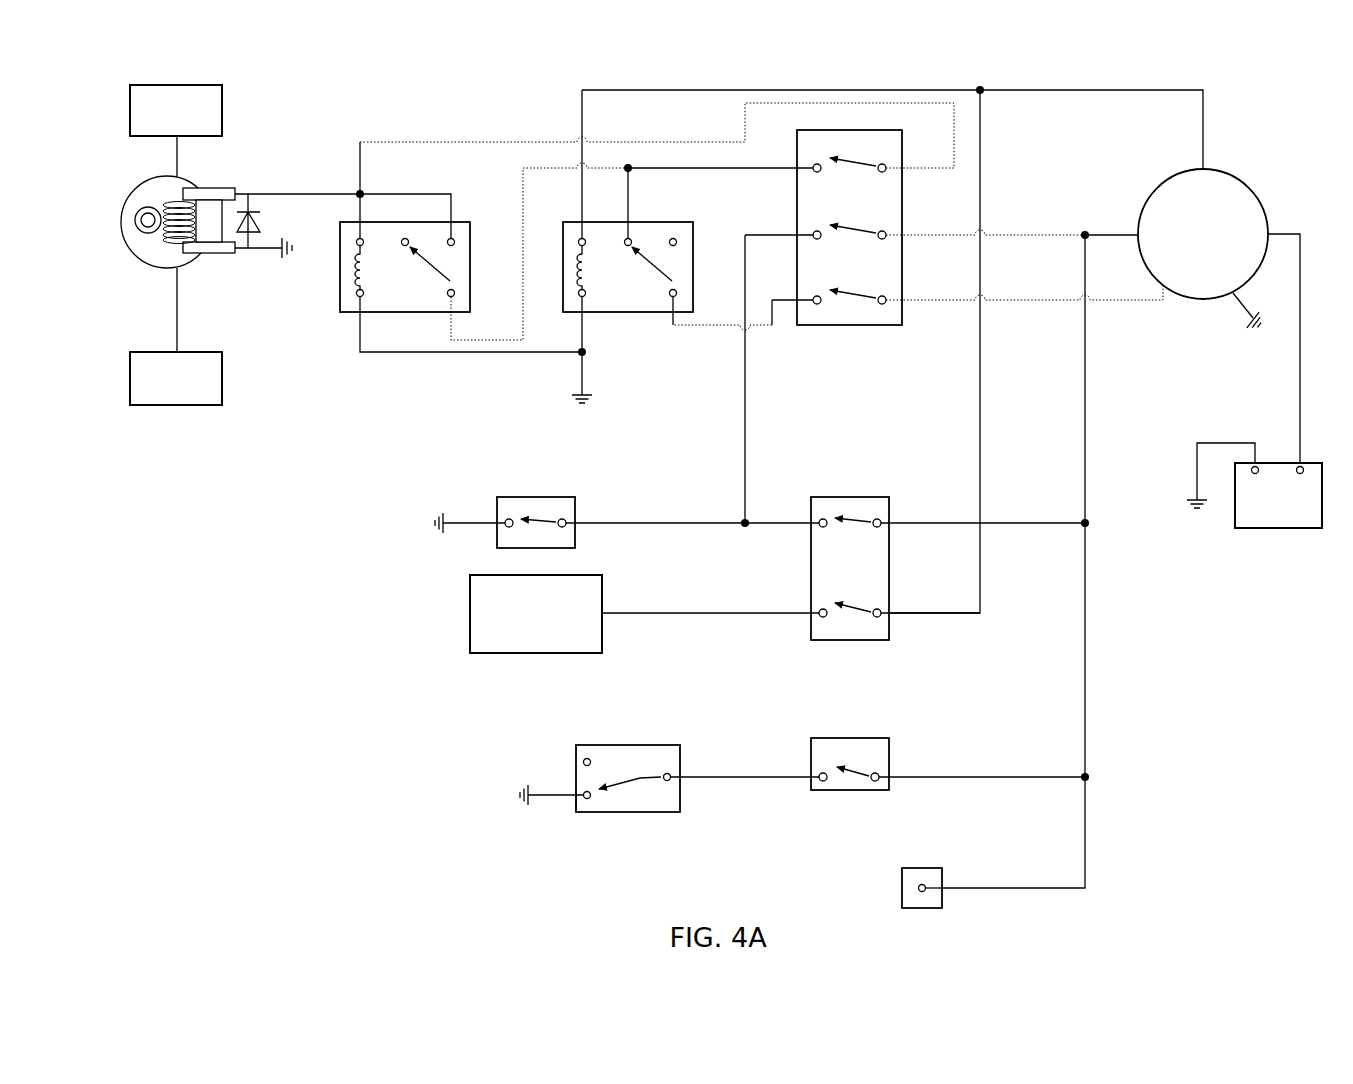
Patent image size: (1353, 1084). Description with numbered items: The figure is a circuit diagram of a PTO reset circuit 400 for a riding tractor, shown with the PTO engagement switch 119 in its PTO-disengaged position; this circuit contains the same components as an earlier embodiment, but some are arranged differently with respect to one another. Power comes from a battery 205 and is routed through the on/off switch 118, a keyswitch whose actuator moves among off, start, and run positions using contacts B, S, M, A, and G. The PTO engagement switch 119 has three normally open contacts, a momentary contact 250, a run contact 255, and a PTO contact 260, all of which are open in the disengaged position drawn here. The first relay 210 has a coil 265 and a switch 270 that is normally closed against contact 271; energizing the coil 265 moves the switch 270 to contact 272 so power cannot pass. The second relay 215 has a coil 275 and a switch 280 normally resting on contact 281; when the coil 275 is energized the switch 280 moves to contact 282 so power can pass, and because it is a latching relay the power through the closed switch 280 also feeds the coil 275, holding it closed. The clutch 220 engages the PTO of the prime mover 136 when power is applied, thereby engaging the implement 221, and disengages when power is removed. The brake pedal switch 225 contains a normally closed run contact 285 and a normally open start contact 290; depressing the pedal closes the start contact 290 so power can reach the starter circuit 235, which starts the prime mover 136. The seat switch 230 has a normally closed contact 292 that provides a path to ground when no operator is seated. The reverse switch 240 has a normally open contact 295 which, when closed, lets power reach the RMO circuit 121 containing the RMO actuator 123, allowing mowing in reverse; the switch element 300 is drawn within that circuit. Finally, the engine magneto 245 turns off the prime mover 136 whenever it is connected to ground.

The PTO reset circuit 400 is at (482, 125).
The prime mover 136 is at (222, 90).
The clutch 220 is at (190, 262).
The implement 221 is at (222, 400).
The second relay 215 is at (385, 313).
The coil 275 is at (350, 265).
The contact 282 is at (451, 240).
The contact 281 is at (403, 243).
The switch 280 is at (435, 262).
The first relay 210 is at (673, 312).
The coil 265 is at (570, 270).
The contact 272 is at (673, 240).
The contact 271 is at (626, 243).
The switch 270 is at (657, 262).
The PTO engagement switch 119 is at (797, 143).
The momentary contact 250 is at (860, 166).
The run contact 255 is at (860, 233).
The PTO contact 260 is at (860, 298).
The on/off switch 118 is at (1257, 193).
The battery 205 is at (1235, 510).
The seat switch 230 is at (508, 496).
The contact 292 is at (538, 521).
The starter circuit 235 is at (483, 574).
The brake pedal switch 225 is at (811, 547).
The run contact 285 is at (862, 521).
The start contact 290 is at (862, 612).
The RMO actuator 123 is at (680, 755).
The RMO switch arm 300 is at (636, 779).
The RMO circuit 121 is at (576, 803).
The reverse switch 240 is at (811, 783).
The contact 295 is at (860, 775).
The engine magneto 245 is at (902, 880).